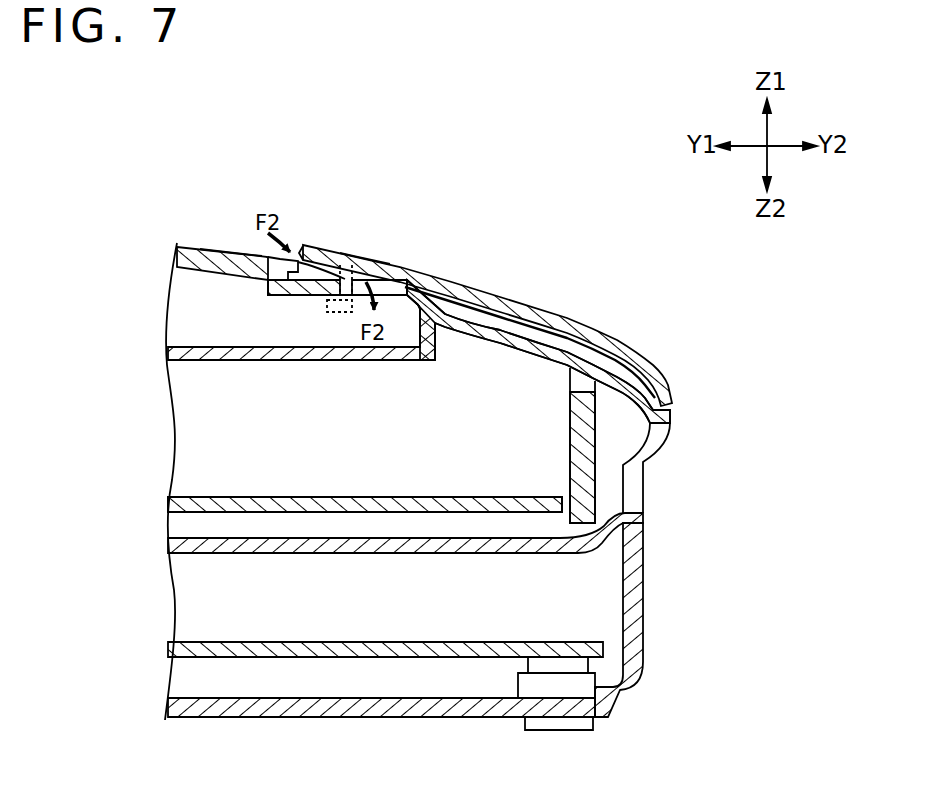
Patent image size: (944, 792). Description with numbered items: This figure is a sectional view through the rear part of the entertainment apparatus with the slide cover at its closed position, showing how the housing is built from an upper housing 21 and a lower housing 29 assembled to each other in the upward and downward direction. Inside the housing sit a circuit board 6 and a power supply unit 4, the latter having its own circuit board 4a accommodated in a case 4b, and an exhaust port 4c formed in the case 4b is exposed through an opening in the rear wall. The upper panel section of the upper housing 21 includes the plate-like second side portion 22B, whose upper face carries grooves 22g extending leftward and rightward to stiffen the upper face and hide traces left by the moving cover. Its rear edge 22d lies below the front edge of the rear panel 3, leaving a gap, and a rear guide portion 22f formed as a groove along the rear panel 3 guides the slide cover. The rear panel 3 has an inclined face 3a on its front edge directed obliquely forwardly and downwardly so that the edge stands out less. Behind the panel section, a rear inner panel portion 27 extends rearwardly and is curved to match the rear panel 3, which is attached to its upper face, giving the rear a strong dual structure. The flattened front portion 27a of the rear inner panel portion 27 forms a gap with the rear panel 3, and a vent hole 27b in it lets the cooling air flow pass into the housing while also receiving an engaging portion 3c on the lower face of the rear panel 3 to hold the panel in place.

The rear panel 3 is at (445, 275).
The inclined face 3a is at (300, 255).
The engaging portion 3c is at (363, 255).
The power supply unit 4 is at (357, 560).
The circuit board 4a is at (278, 503).
The case 4b is at (414, 553).
The exhaust port 4c is at (612, 483).
The circuit board 6 is at (468, 645).
The upper housing 21 is at (476, 285).
The second side portion 22B is at (241, 255).
The rear edge 22d is at (315, 266).
The rear guide portion 22f is at (270, 295).
The grooves 22g is at (236, 253).
The rear inner panel portion 27 is at (567, 337).
The front portion 27a is at (311, 283).
The vent hole 27b is at (380, 287).
The lower housing 29 is at (640, 615).